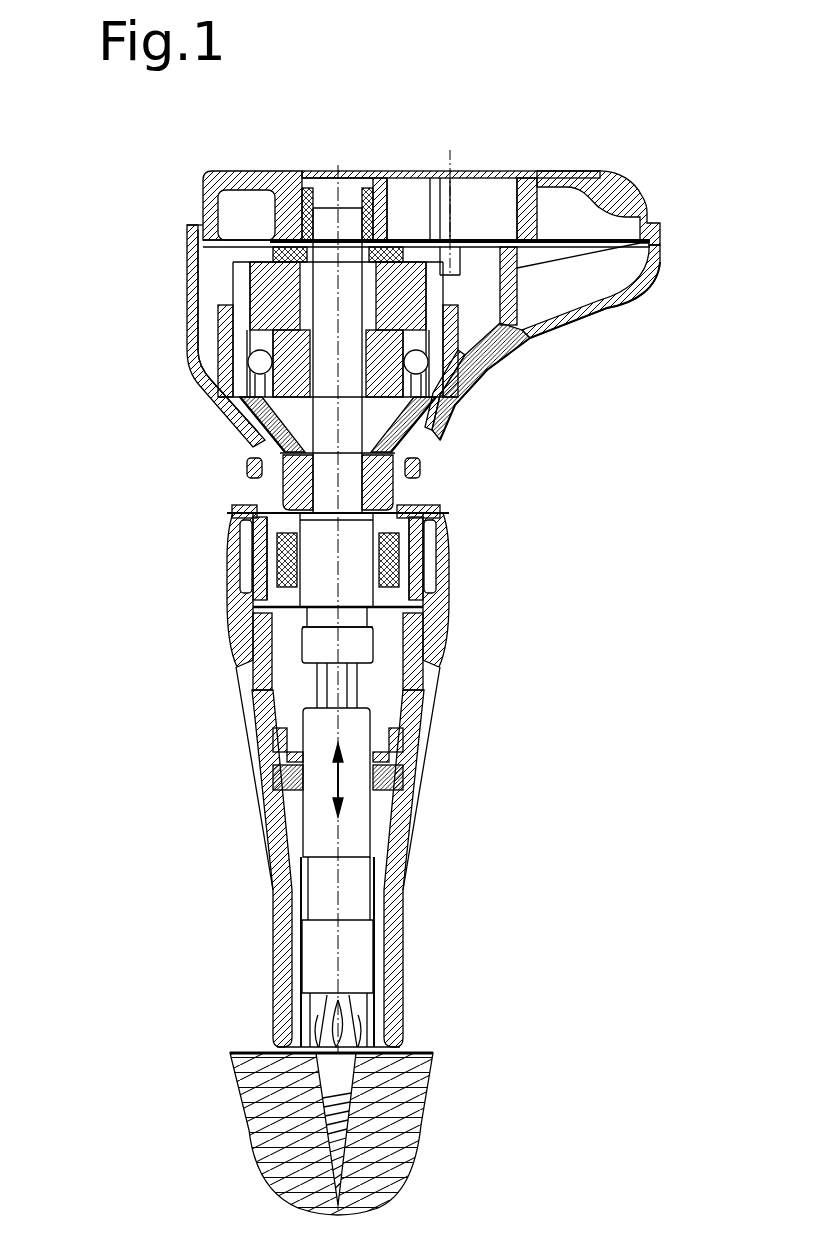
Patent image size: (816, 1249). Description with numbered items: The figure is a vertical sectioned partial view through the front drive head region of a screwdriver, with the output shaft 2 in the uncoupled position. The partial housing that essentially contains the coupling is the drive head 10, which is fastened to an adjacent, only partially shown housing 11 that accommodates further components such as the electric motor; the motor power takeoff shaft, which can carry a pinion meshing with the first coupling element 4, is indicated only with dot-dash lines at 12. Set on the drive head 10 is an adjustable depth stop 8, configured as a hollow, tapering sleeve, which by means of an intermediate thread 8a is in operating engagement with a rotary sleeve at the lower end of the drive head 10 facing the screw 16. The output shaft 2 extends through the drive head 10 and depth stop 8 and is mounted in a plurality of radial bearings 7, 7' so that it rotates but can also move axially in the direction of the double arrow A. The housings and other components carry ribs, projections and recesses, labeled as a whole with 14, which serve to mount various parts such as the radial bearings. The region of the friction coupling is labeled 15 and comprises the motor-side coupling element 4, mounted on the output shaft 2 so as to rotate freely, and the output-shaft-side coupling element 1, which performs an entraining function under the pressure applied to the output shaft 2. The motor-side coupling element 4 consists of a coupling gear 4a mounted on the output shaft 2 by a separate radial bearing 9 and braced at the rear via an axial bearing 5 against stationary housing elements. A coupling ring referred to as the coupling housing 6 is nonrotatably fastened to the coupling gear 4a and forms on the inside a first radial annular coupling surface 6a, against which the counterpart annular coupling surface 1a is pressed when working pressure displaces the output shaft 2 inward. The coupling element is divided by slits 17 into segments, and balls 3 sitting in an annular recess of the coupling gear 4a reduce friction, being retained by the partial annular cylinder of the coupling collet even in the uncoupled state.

The coupling element 1 is at (245, 398).
The counterpart annular coupling surface 1a is at (250, 362).
The output shaft 2 is at (255, 480).
The balls 3 is at (470, 393).
The coupling element 4 is at (238, 287).
The coupling gear 4a is at (250, 270).
The axial bearing 5 is at (213, 240).
The coupling housing 6 is at (477, 343).
The first radial annular coupling surface 6a is at (483, 370).
The radial bearing 7 is at (256, 590).
The radial bearing 7' is at (507, 182).
The depth stop 8 is at (392, 888).
The intermediate thread 8a is at (450, 640).
The radial bearing 9 is at (262, 292).
The drive head 10 is at (625, 315).
The housing 11 is at (597, 177).
The electric motor power takeoff shaft 12 is at (450, 203).
The ribs, projections, recesses 14 is at (295, 207).
The friction coupling region 15 is at (277, 323).
The screw 16 is at (348, 1068).
The slits 17 is at (262, 440).
The double arrow A is at (340, 775).